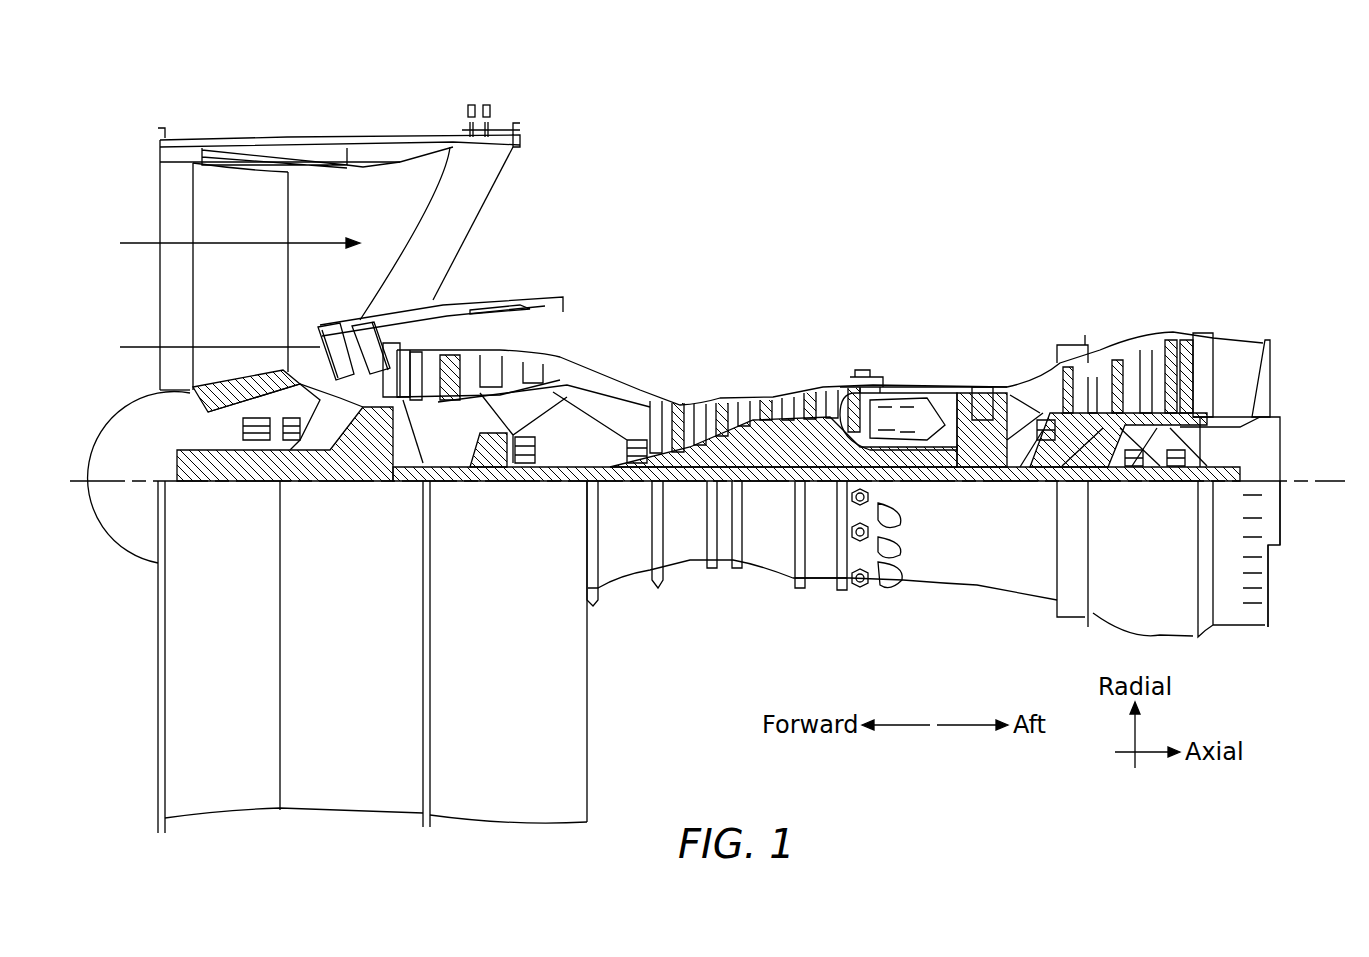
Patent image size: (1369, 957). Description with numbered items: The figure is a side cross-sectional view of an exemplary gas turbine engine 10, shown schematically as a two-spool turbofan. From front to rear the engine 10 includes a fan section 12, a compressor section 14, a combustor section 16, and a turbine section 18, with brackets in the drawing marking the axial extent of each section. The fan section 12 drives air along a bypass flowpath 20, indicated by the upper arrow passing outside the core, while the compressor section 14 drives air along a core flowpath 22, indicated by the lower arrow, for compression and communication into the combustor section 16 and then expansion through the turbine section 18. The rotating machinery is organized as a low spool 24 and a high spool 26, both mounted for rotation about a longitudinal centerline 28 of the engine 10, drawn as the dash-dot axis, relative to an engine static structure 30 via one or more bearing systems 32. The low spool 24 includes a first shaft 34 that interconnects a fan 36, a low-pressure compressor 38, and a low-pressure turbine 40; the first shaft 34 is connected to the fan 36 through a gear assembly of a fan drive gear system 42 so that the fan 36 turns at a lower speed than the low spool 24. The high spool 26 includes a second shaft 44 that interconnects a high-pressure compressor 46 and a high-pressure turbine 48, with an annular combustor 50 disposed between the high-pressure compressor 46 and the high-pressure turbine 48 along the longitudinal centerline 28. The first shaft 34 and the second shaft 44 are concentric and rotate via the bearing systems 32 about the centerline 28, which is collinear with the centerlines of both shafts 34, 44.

The gas turbine engine 10 is at (1022, 195).
The fan section 12 is at (423, 115).
The compressor section 14 is at (437, 262).
The combustor section 16 is at (967, 262).
The turbine section 18 is at (1205, 262).
The bypass flowpath 20 is at (132, 243).
The core flowpath 22 is at (132, 347).
The low spool 24 is at (772, 484).
The high spool 26 is at (735, 467).
The longitudinal centerline 28 is at (1300, 480).
The engine static structure 30 is at (824, 583).
The bearing systems 32 is at (1042, 455).
The first shaft 34 is at (608, 485).
The fan 36 is at (220, 286).
The low-pressure compressor 38 is at (507, 358).
The low-pressure turbine 40 is at (1130, 338).
The fan drive gear system 42 is at (378, 488).
The second shaft 44 is at (960, 470).
The high-pressure compressor 46 is at (735, 402).
The high-pressure turbine 48 is at (985, 385).
The annular combustor 50 is at (903, 405).